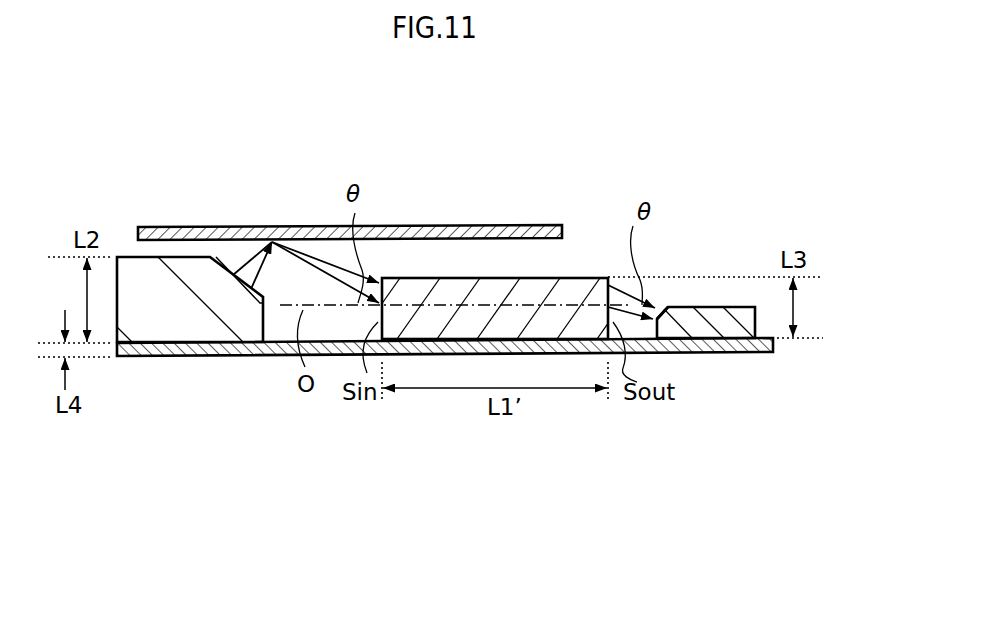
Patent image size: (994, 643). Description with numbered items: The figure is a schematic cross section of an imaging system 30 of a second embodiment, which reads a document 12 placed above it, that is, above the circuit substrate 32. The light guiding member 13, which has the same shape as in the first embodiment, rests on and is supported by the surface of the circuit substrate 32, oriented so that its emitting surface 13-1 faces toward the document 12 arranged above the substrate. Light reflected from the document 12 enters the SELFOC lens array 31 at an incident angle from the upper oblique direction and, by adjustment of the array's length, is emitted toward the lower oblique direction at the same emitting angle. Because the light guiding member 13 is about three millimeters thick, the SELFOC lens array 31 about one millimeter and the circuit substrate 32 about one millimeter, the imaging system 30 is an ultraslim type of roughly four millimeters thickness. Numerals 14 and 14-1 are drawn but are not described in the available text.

The document 12 is at (247, 240).
The light guiding member 13 is at (190, 275).
The emitting surface 13-1 is at (229, 266).
The light-receiving side optical block 14 is at (700, 285).
The reflecting surface of block 14 14-1 is at (663, 307).
The imaging system 30 is at (502, 258).
The SELFOC lens array 31 is at (498, 288).
The circuit substrate 32 is at (237, 347).